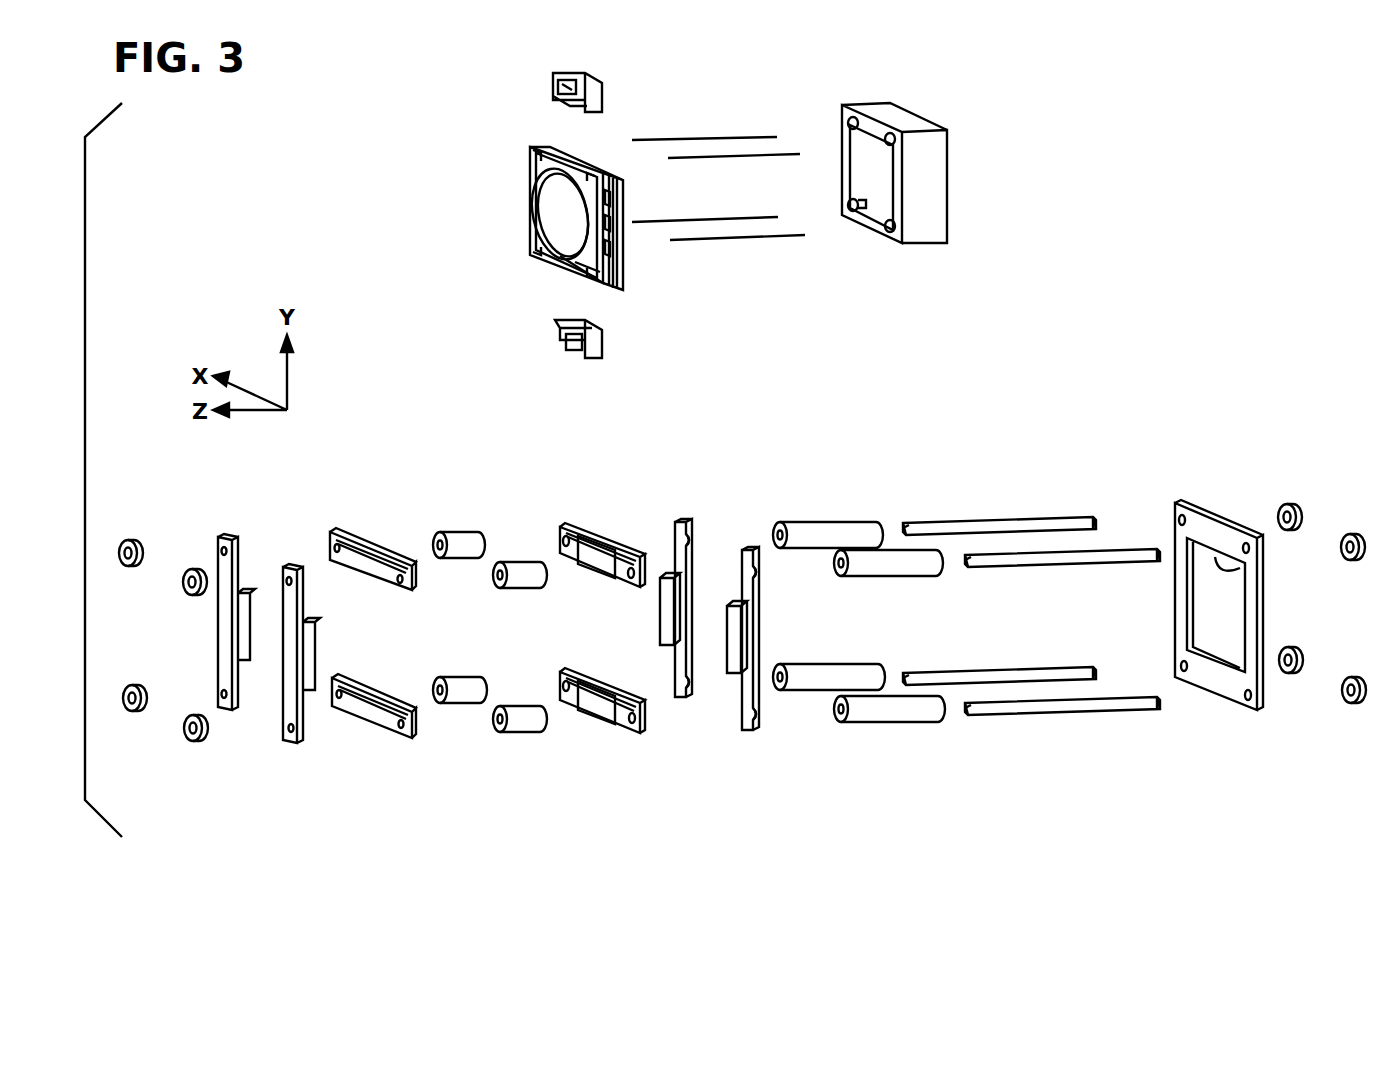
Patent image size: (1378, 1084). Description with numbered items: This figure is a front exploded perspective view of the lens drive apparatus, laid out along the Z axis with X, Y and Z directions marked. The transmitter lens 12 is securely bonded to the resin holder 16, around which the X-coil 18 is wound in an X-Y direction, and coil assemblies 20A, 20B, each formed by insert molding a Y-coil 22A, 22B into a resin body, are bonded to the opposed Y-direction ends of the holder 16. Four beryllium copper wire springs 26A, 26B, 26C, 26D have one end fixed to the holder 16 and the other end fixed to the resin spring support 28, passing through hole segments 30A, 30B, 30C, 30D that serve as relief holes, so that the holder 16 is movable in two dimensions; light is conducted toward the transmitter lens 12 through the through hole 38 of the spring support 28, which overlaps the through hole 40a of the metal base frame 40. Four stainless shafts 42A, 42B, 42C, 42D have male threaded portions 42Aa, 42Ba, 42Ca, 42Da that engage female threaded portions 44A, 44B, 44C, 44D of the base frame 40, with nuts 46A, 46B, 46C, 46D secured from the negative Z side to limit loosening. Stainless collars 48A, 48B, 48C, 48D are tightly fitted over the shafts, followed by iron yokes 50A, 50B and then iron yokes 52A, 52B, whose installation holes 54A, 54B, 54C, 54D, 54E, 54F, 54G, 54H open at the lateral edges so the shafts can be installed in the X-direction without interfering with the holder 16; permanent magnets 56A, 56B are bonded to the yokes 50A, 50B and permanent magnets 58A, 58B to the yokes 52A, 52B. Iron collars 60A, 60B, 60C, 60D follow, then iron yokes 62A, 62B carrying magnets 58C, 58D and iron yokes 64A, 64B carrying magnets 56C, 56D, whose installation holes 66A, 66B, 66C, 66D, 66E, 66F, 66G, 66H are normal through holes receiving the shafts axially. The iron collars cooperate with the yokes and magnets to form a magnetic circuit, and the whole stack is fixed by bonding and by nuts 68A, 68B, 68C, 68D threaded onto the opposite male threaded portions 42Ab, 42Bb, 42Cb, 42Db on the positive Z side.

The transmitter lens 12 is at (540, 215).
The holder 16 is at (583, 268).
The X-coil 18 is at (613, 180).
The coil assembly 20A is at (582, 339).
The coil assembly 20B is at (574, 92).
The Y-coil 22A is at (556, 342).
The Y-coil 22B is at (548, 93).
The wire spring 26A is at (727, 242).
The wire spring 26B is at (670, 220).
The wire spring 26C is at (686, 157).
The wire spring 26D is at (742, 137).
The spring support 28 is at (908, 174).
The hole segment 30A is at (892, 240).
The hole segment 30B is at (852, 212).
The hole segment 30C is at (950, 140).
The hole segment 30D is at (856, 117).
The through hole 38 is at (853, 172).
The base frame 40 is at (1225, 610).
The through hole 40a is at (1240, 570).
The shaft 42A is at (1071, 727).
The shaft 42B is at (984, 652).
The shaft 42C is at (1035, 524).
The shaft 42D is at (984, 492).
The male threaded portion 42Aa is at (1157, 710).
The male threaded portion 42Ab is at (975, 716).
The male threaded portion 42Ba is at (1090, 668).
The male threaded portion 42Bb is at (910, 672).
The male threaded portion 42Ca is at (1150, 551).
The male threaded portion 42Cb is at (966, 553).
The male threaded portion 42Da is at (1088, 519).
The male threaded portion 42Db is at (908, 522).
The female threaded portion 44A is at (1248, 702).
The female threaded portion 44B is at (1180, 666).
The female threaded portion 44C is at (1246, 542).
The female threaded portion 44D is at (1182, 513).
The nut 46A is at (1351, 703).
The nut 46B is at (1288, 673).
The nut 46C is at (1350, 534).
The nut 46D is at (1287, 504).
The collar 48A is at (894, 723).
The collar 48B is at (834, 663).
The collar 48C is at (860, 547).
The collar 48D is at (802, 521).
The yoke 50A is at (743, 646).
The yoke 50B is at (657, 610).
The yoke 52A is at (589, 735).
The yoke 52B is at (571, 547).
The installation hole 54A is at (738, 714).
The installation hole 54B is at (744, 562).
The installation hole 54C is at (697, 690).
The installation hole 54D is at (694, 530).
The installation hole 54E is at (631, 724).
The installation hole 54F is at (562, 683).
The installation hole 54G is at (626, 583).
The installation hole 54H is at (562, 542).
The permanent magnet 56A is at (752, 628).
The permanent magnet 56B is at (660, 632).
The permanent magnet 56C is at (312, 655).
The permanent magnet 56D is at (246, 592).
The permanent magnet 58A is at (600, 712).
The permanent magnet 58B is at (591, 526).
The permanent magnet 58C is at (392, 692).
The permanent magnet 58D is at (386, 544).
The collar 60A is at (520, 735).
The collar 60B is at (455, 677).
The collar 60C is at (516, 590).
The collar 60D is at (458, 532).
The yoke 62A is at (374, 702).
The yoke 62B is at (369, 559).
The yoke 64A is at (283, 649).
The yoke 64B is at (221, 599).
The installation hole 66A is at (401, 726).
The installation hole 66B is at (342, 690).
The installation hole 66C is at (400, 583).
The installation hole 66D is at (338, 542).
The installation hole 66E is at (288, 728).
The installation hole 66F is at (289, 576).
The installation hole 66G is at (222, 694).
The installation hole 66H is at (226, 546).
The nut 68A is at (193, 743).
The nut 68B is at (132, 713).
The nut 68C is at (192, 568).
The nut 68D is at (128, 540).